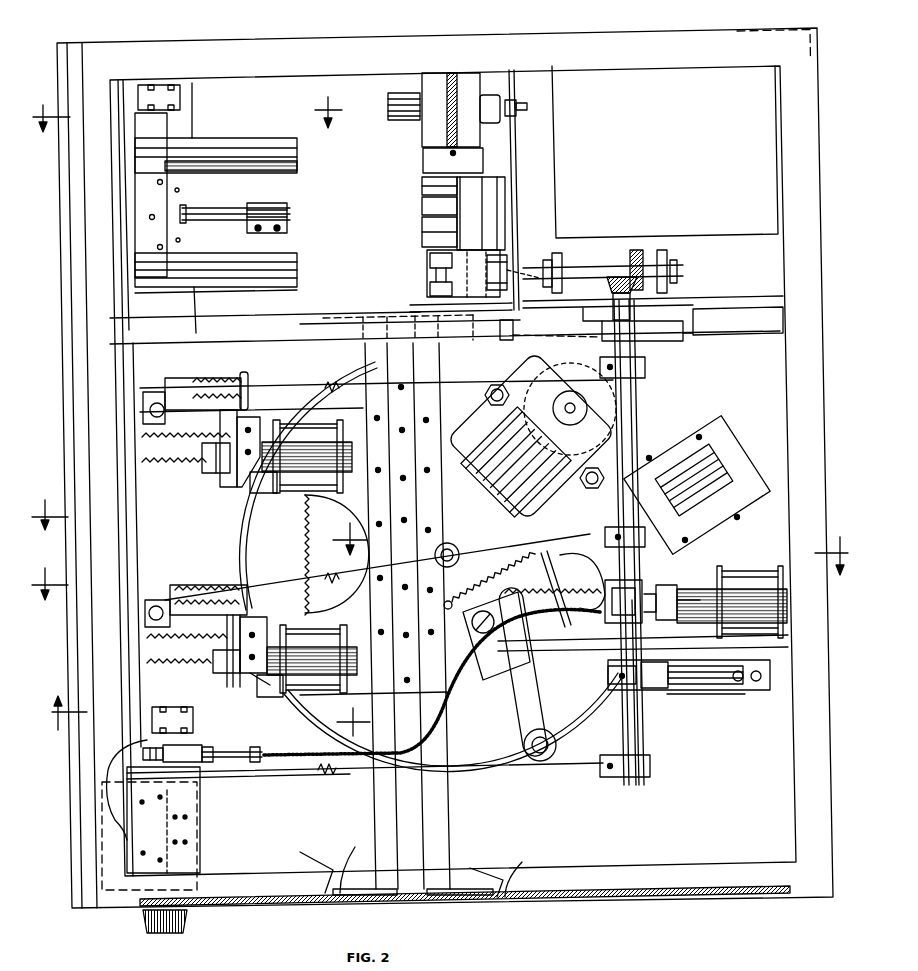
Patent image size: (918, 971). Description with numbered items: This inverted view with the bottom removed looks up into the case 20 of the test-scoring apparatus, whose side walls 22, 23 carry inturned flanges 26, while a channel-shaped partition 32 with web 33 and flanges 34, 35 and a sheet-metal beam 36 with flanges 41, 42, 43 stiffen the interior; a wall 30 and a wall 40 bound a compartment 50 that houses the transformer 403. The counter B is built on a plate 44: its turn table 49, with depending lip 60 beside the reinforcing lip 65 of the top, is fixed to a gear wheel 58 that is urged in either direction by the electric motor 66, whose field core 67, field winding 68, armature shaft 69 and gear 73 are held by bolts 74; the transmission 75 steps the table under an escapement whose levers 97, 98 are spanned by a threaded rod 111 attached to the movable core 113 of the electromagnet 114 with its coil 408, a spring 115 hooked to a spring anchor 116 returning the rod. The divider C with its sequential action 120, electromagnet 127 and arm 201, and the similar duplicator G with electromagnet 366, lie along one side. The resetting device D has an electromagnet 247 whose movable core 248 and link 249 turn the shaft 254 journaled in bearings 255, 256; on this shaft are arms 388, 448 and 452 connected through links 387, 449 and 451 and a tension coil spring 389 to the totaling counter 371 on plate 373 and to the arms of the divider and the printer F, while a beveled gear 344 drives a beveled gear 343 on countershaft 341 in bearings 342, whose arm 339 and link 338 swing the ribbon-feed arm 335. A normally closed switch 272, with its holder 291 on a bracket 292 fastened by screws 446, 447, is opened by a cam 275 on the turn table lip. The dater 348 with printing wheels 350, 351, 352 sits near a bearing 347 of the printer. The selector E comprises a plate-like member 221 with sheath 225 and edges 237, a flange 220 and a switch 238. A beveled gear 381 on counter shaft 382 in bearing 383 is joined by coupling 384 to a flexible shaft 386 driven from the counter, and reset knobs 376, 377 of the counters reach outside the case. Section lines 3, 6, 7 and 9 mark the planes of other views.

The case 20 is at (117, 46).
The side wall 23 is at (772, 31).
The transformer 403 is at (713, 95).
The inturned flange 26 is at (377, 64).
The flange 220 is at (152, 175).
The tubular sheath 225 is at (238, 147).
The plate-like member 221 is at (272, 184).
The switch 238 is at (235, 213).
The selector E is at (290, 268).
The printer F is at (412, 125).
The edge 237 is at (423, 131).
The swinging arm 335 is at (527, 103).
The wall 30 is at (514, 166).
The link 338 is at (498, 195).
The compartment 50 is at (535, 212).
The printing wheel 350 is at (424, 188).
The dater 348 is at (424, 212).
The printing wheel 351 is at (426, 224).
The printing wheel 352 is at (438, 240).
The bearing 347 is at (423, 307).
The arm 339 is at (500, 257).
The countershaft 341 is at (597, 265).
The bearing 342 is at (556, 255).
The beveled gear 344 is at (614, 280).
The beveled gear 343 is at (641, 262).
The web 33 is at (683, 300).
The wall 40 is at (722, 318).
The bearing 255 is at (684, 342).
The flange 35 is at (278, 318).
The partition 32 is at (306, 320).
The flange 43 is at (325, 325).
The flange 34 is at (508, 326).
The arm 201 is at (158, 398).
The sequential action 120 is at (263, 405).
The link 451 is at (300, 388).
The duplicator G is at (197, 462).
The divider C is at (205, 673).
The lip 65 is at (238, 512).
The turn table 49 is at (250, 540).
The lip 60 is at (242, 559).
The electromagnet 366 is at (313, 465).
The gear wheel 58 is at (312, 531).
The link 449 is at (280, 583).
The electromagnet 127 is at (305, 640).
The flange 41 is at (413, 538).
The beam 36 is at (420, 537).
The flange 42 is at (380, 832).
The side wall 22 is at (505, 903).
The field core 67 is at (507, 370).
The field winding 68 is at (500, 453).
The electric motor 66 is at (470, 490).
The gear 73 is at (563, 365).
The armature shaft 69 is at (572, 412).
The bolt 74 is at (492, 390).
The arm 452 is at (632, 378).
The counter B is at (582, 530).
The resetting device D is at (629, 606).
The shaft 254 is at (640, 735).
The arm 388 is at (613, 778).
The bearing 256 is at (675, 647).
The plate 44 is at (770, 643).
The electromagnet 247 is at (750, 578).
The link 249 is at (655, 588).
The movable core 248 is at (680, 600).
The threaded rod 111 is at (573, 538).
The coil 408 is at (712, 440).
The electromagnet 114 is at (703, 459).
The movable core 113 is at (712, 457).
The upstanding arm 448 is at (712, 503).
The spring 115 is at (485, 573).
The screw 447 is at (508, 572).
The spring anchor 116 is at (449, 601).
The lever 97 is at (592, 580).
The lever 98 is at (543, 630).
The transmission 75 is at (538, 693).
The holder 291 is at (520, 678).
The switch 272 is at (522, 743).
The screw 446 is at (475, 623).
The flexible shaft 386 is at (363, 763).
The tension coil spring 389 is at (322, 777).
The link 387 is at (554, 766).
The bracket 292 is at (515, 763).
The cam 275 is at (580, 722).
The beveled gear 381 is at (192, 720).
The bearing 383 is at (180, 752).
The counter shaft 382 is at (245, 746).
The coupling 384 is at (262, 750).
The plate 373 is at (185, 805).
The totaling counter 371 is at (178, 835).
The knob 376 is at (155, 923).
The reset knob 377 is at (187, 923).
The section line 9- 9 is at (187, 125).
The section line 6- 6 is at (199, 535).
The section line 3- 3 is at (440, 576).
The section line 7- 7 is at (211, 707).